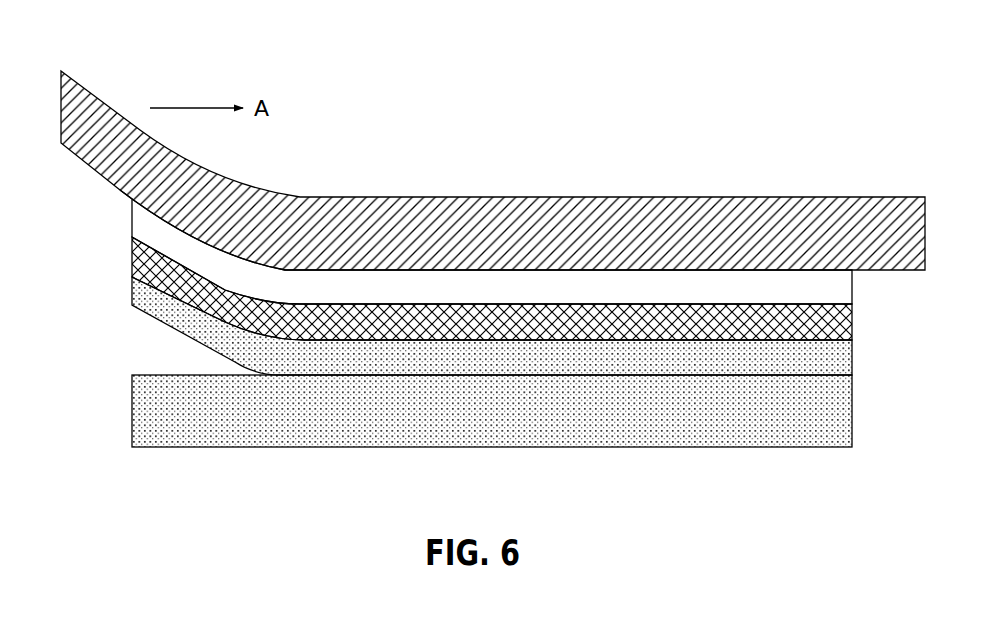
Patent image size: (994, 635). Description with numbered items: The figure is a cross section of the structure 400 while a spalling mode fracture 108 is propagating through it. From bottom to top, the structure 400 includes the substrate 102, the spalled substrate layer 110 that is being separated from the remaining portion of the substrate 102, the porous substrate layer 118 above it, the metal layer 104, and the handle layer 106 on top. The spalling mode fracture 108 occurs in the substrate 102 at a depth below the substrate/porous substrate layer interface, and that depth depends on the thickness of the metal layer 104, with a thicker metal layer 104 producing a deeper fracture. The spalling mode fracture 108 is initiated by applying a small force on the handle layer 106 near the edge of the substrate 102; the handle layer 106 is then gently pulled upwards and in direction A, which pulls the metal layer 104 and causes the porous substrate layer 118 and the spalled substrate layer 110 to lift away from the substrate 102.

The structure 400 is at (152, 40).
The substrate 102 is at (831, 431).
The spalled substrate layer 110 is at (831, 369).
The porous substrate layer 118 is at (831, 333).
The metal layer 104 is at (831, 299).
The handle layer 106 is at (897, 246).
The spalling mode fracture 108 is at (132, 365).